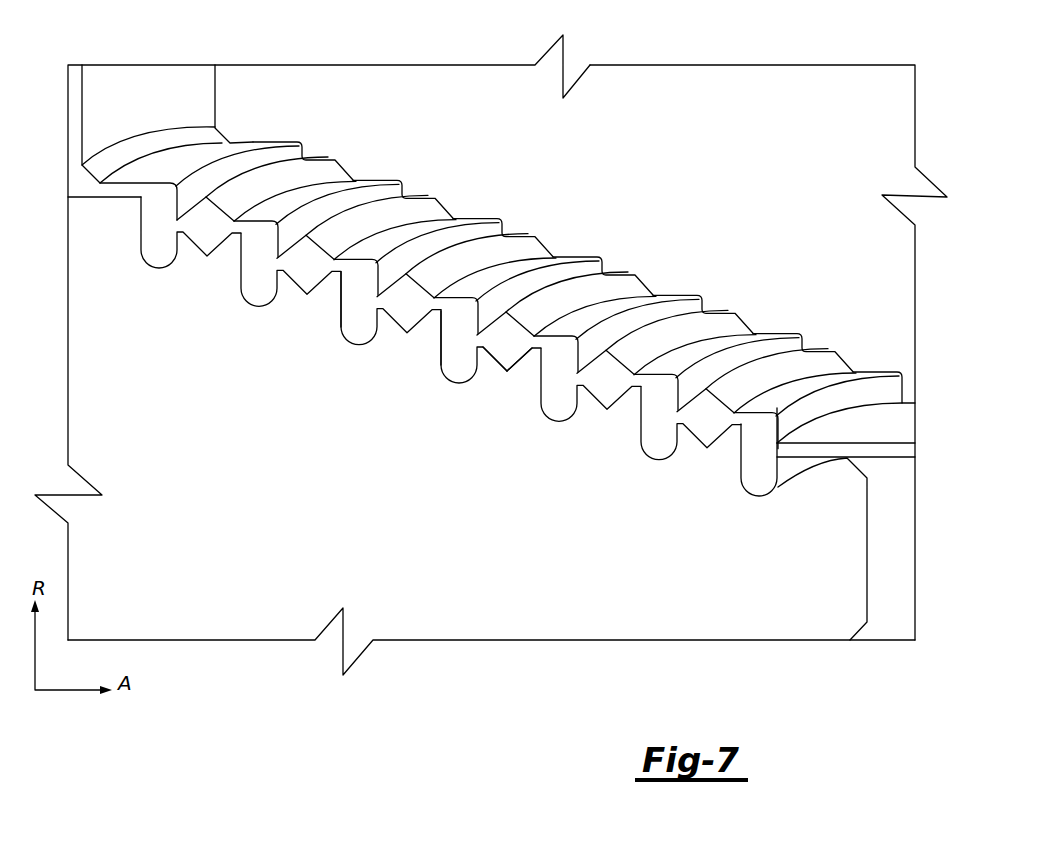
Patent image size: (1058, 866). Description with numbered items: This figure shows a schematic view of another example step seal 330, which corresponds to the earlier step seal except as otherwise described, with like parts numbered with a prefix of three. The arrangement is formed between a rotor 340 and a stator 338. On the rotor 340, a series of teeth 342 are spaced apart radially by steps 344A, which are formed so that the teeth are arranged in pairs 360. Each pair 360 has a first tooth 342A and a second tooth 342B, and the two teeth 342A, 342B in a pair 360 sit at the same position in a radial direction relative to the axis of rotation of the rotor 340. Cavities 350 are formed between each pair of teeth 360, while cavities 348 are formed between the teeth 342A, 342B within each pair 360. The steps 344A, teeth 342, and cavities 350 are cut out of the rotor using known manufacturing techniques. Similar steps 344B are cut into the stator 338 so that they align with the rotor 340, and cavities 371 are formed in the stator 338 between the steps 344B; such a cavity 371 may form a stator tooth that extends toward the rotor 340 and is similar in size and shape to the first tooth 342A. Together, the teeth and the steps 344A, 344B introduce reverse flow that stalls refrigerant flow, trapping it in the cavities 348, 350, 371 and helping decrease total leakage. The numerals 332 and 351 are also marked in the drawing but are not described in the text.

The step seal 330 is at (650, 47).
The stator 338 is at (801, 95).
The rotor 340 is at (247, 626).
The blade retention slot 332 is at (150, 232).
The teeth 342 is at (382, 333).
The first tooth 342A is at (487, 356).
The second tooth 342B is at (532, 360).
The steps 344A is at (342, 310).
The steps 344B is at (378, 273).
The cavities 348 is at (606, 392).
The cavities 350 is at (442, 365).
The slot bottom 351 is at (456, 388).
The pairs 360 is at (740, 488).
The cavities 371 is at (497, 258).